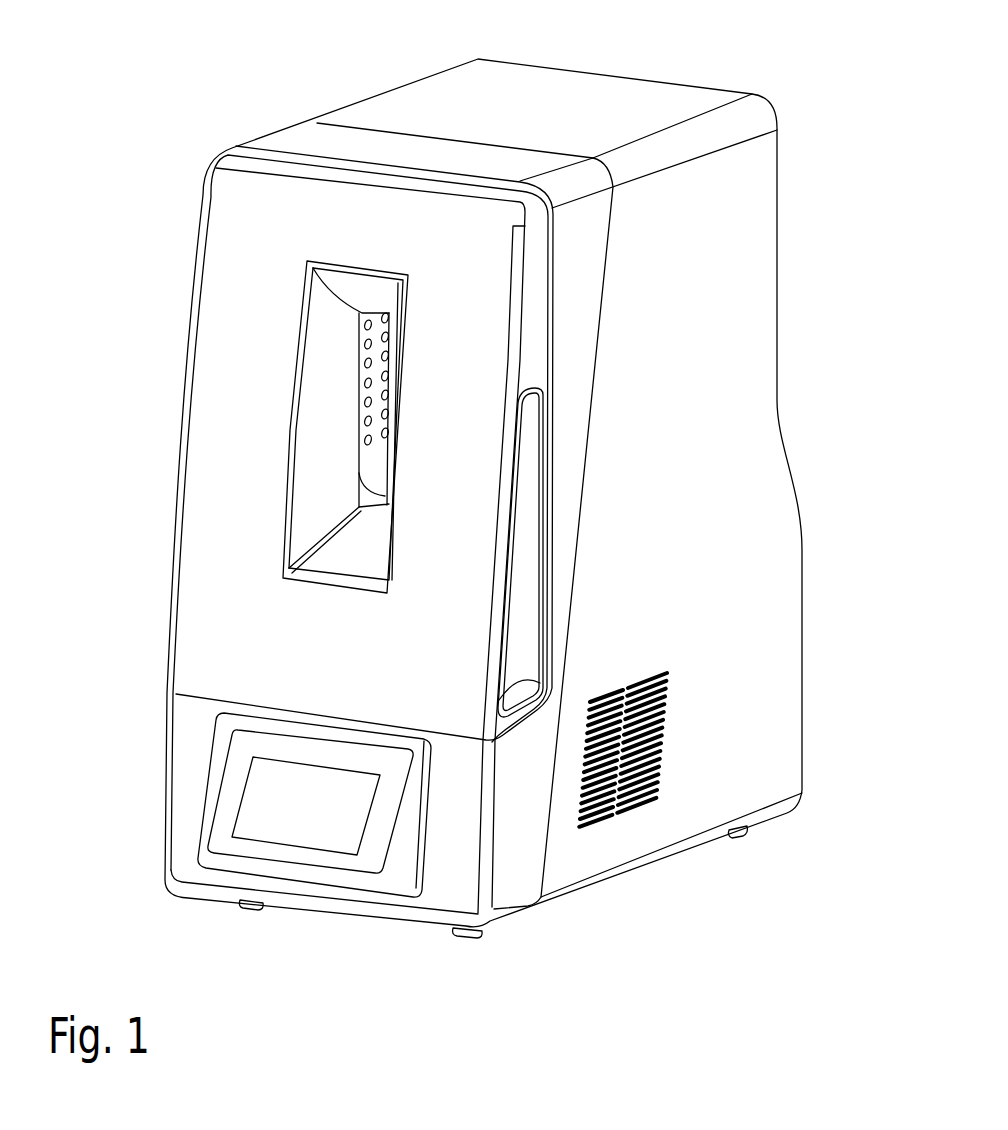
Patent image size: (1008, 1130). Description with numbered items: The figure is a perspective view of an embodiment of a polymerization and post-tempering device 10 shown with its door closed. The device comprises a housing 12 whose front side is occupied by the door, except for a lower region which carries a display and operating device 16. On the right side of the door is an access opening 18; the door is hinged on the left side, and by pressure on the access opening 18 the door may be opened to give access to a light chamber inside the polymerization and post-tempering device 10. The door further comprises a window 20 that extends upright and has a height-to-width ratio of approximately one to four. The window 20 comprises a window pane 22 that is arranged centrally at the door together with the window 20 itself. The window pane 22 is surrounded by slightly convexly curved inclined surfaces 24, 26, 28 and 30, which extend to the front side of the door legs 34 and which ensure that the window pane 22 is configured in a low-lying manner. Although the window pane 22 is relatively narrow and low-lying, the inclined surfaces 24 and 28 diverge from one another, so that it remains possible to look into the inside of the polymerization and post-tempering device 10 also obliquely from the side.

The polymerization and post-tempering device 10 is at (309, 92).
The housing 12 is at (533, 87).
The display and operating device 16 is at (307, 822).
The access opening 18 is at (520, 653).
The window 20 is at (331, 489).
The window pane 22 is at (373, 430).
The inclined surface 24 is at (327, 365).
The inclined surface 26 is at (353, 290).
The inclined surface 28 is at (398, 318).
The inclined surface 30 is at (350, 546).
The door legs 34 is at (447, 577).